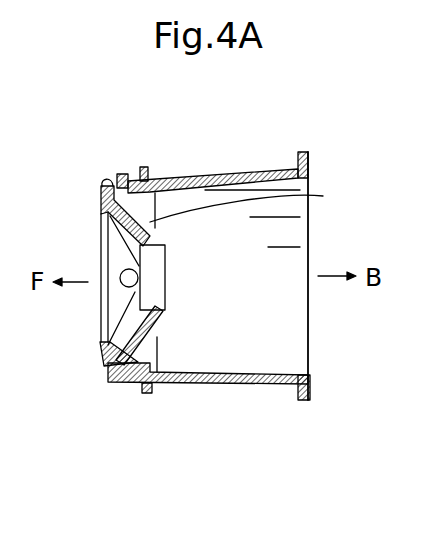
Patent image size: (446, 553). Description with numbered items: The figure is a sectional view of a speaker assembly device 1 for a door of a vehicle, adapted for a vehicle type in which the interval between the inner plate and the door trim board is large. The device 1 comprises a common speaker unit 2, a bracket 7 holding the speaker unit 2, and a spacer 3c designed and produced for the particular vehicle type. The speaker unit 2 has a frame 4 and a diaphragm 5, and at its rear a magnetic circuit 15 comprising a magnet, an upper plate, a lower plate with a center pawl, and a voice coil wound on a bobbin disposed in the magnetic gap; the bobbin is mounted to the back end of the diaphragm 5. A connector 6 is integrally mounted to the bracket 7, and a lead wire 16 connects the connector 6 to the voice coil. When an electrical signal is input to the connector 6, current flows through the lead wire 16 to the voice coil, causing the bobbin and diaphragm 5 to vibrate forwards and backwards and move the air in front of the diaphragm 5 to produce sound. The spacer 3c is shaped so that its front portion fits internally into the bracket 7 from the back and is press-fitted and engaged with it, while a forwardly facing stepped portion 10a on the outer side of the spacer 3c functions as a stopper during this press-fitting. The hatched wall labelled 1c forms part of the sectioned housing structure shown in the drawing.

The speaker assembly device 1 is at (212, 508).
The upper housing wall 1c is at (213, 160).
The spacer 3c is at (253, 402).
The connector 6 is at (121, 173).
The frame 4 is at (100, 236).
The speaker unit 2 is at (100, 302).
The diaphragm 5 is at (90, 358).
The bracket 7 is at (115, 380).
The stepped portion 10a is at (143, 393).
The magnetic circuit 15 is at (165, 290).
The lead wire 16 is at (251, 201).